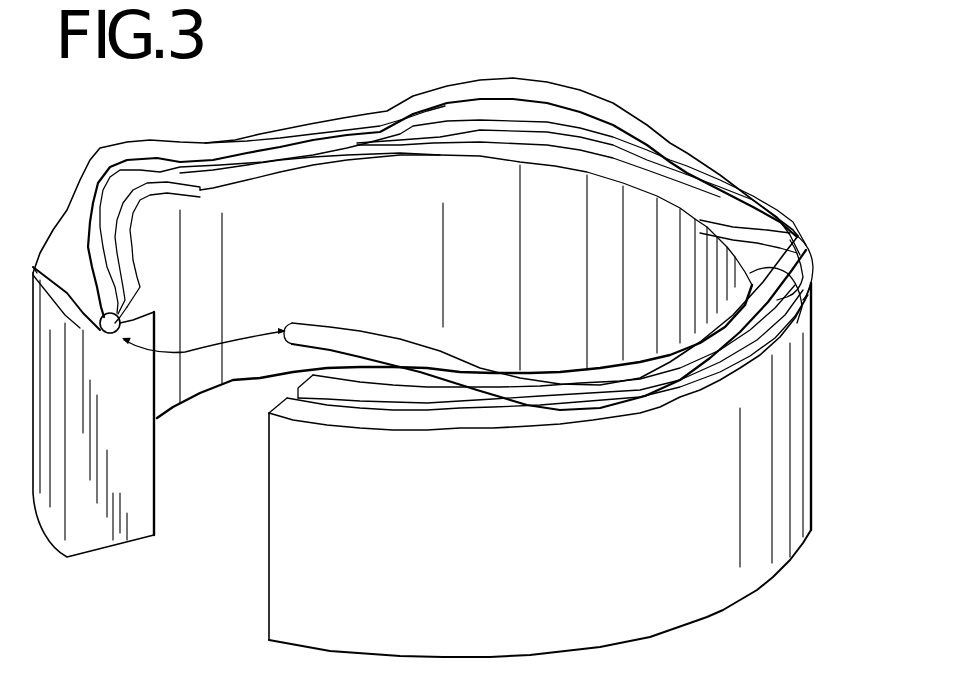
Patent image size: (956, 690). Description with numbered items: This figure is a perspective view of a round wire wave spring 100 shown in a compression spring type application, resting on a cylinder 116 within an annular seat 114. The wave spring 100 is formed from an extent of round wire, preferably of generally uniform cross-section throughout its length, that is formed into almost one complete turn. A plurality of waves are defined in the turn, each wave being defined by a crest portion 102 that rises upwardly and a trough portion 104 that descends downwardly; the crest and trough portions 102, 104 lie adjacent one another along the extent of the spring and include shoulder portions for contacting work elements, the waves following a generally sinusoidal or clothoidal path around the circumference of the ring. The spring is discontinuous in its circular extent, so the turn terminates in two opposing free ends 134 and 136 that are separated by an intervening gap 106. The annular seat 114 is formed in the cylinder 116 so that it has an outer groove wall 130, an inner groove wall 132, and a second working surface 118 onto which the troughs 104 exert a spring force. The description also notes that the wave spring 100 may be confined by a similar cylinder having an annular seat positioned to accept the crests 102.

The round wire wave spring 100 is at (656, 112).
The crest portion 102 is at (100, 150).
The trough portion 104 is at (280, 139).
The gap 106 is at (197, 353).
The annular seat 114 is at (811, 285).
The cylinder 116 is at (795, 443).
The second working surface 118 is at (120, 333).
The outer groove wall 130 is at (33, 267).
The inner groove wall 132 is at (127, 307).
The free end 134 is at (110, 335).
The free end 136 is at (288, 325).